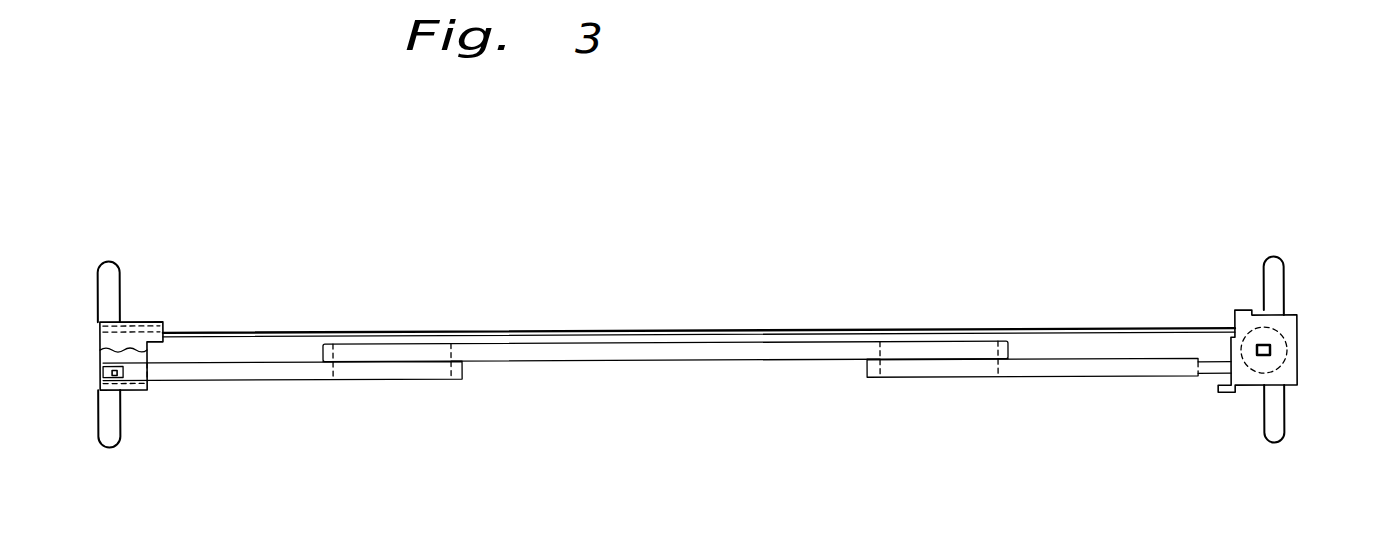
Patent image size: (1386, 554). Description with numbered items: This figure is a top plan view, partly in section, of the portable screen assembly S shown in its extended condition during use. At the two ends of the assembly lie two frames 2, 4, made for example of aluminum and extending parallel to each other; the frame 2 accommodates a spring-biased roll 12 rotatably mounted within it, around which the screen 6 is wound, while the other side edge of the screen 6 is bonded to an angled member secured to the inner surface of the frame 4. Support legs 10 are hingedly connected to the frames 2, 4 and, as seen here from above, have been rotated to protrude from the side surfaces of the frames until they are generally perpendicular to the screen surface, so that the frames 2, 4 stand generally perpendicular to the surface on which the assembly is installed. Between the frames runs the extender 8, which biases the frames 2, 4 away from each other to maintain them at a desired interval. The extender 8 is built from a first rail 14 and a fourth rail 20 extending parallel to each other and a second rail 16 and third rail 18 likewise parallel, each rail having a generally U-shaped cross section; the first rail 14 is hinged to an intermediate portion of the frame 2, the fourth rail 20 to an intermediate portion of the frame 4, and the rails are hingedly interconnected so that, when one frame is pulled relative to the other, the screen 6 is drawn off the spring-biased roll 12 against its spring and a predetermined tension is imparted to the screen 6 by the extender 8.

The frame 2 is at (1298, 366).
The frame 4 is at (98, 342).
The screen 6 is at (678, 328).
The extender 8 is at (667, 406).
The support legs 10 is at (108, 268).
The spring-biased roll 12 is at (1297, 334).
The first rail 14 is at (1098, 374).
The second rail 16 is at (793, 353).
The third rail 18 is at (402, 352).
The fourth rail 20 is at (270, 376).
The portable screen assembly S is at (940, 220).